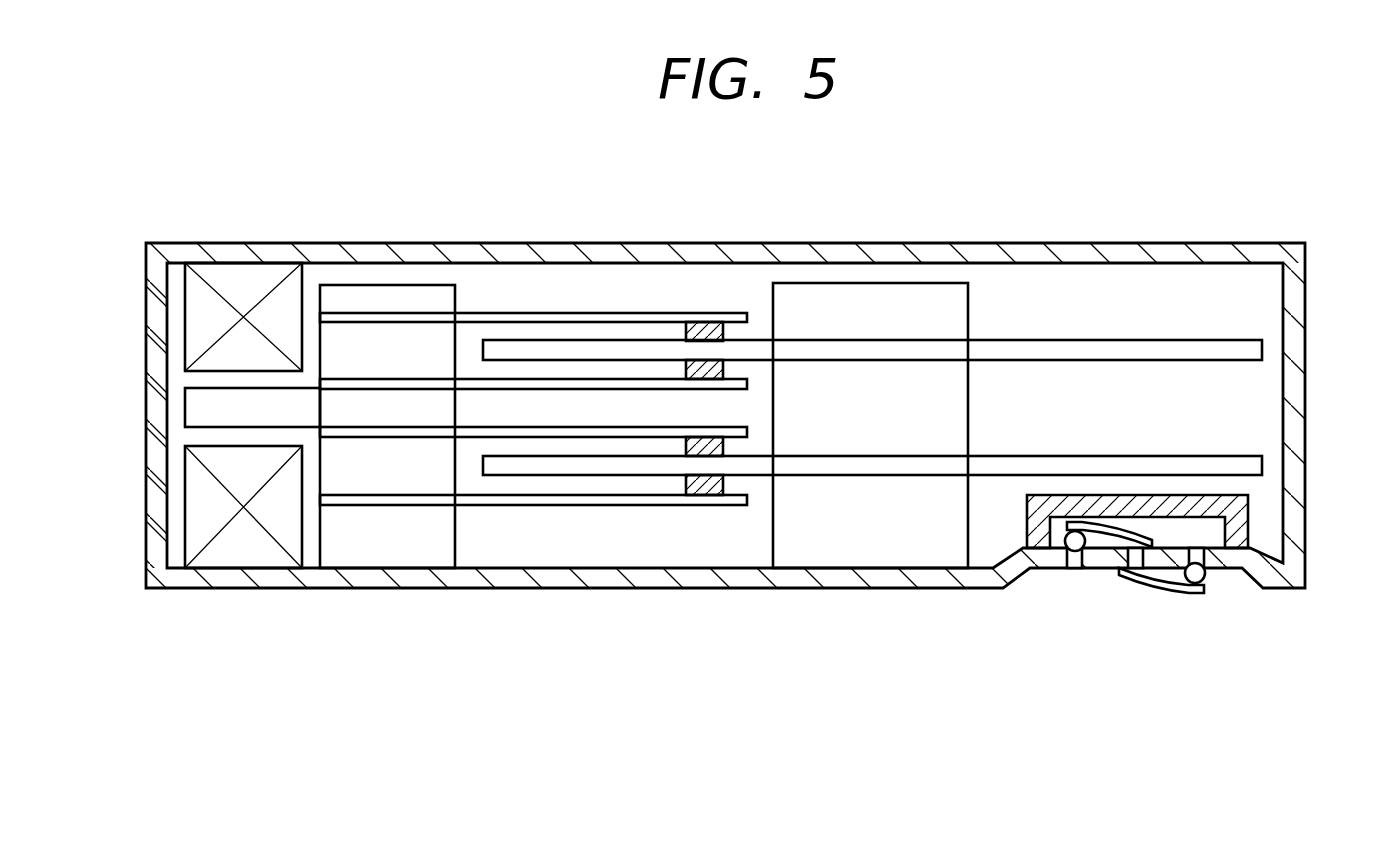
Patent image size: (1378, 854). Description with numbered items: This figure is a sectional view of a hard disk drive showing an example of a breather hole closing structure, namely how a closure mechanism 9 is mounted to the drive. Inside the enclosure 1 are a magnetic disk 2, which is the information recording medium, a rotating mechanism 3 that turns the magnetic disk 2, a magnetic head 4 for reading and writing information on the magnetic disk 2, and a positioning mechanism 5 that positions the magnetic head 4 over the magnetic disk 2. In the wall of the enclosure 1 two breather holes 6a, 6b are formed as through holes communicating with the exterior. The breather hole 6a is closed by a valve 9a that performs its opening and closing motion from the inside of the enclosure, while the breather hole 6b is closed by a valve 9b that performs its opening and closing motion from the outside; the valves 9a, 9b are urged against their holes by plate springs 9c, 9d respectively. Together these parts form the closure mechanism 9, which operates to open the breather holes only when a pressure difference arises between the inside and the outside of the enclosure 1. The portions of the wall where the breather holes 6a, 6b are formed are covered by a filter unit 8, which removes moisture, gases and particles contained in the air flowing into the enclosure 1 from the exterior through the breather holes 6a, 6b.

The enclosure 1 is at (773, 245).
The magnetic disk 2 is at (1115, 345).
The rotating mechanism 3 is at (872, 540).
The magnetic head 4 is at (698, 328).
The positioning mechanism 5 is at (373, 328).
The breather hole 6a is at (1074, 569).
The breather hole 6b is at (1197, 556).
The filter unit 8 is at (1102, 503).
The closure mechanism 9 is at (1262, 697).
The valve 9a is at (1063, 551).
The valve 9b is at (1203, 583).
The plate spring 9c is at (1108, 543).
The plate spring 9d is at (1158, 579).